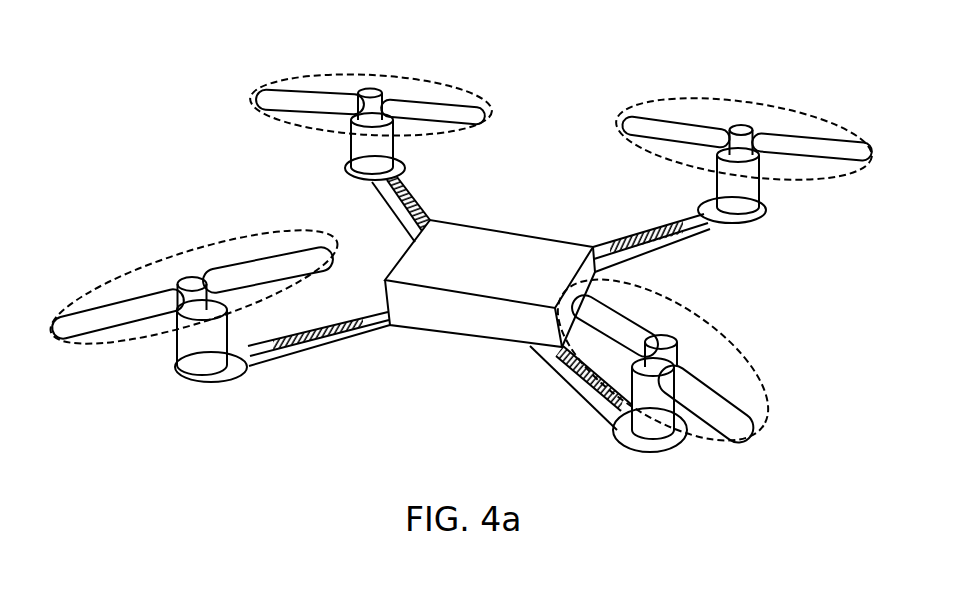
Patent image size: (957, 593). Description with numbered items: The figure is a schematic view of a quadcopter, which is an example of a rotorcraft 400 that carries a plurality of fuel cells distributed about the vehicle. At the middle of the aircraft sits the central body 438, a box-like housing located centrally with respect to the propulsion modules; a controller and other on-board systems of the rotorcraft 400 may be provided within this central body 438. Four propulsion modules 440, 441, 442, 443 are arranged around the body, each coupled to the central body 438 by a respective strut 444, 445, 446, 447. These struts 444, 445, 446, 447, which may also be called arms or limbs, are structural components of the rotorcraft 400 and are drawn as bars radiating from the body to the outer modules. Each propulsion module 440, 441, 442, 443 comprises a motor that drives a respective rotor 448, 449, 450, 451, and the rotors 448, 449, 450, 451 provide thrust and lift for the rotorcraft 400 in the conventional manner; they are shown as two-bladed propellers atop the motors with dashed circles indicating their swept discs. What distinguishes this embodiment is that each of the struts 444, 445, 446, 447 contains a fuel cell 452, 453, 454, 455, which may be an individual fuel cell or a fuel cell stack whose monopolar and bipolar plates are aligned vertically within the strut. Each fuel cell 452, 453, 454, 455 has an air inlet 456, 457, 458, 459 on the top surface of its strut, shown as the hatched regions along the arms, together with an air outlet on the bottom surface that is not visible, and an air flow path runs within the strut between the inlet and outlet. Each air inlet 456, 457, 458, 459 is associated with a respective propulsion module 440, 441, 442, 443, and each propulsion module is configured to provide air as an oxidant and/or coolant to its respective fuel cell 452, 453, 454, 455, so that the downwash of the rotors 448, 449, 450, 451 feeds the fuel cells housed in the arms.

The rotorcraft 400 is at (208, 92).
The central body 438 is at (462, 320).
The propulsion module 440 is at (653, 430).
The propulsion module 441 is at (193, 338).
The propulsion module 442 is at (367, 147).
The propulsion module 443 is at (747, 191).
The strut 444 is at (547, 357).
The strut 445 is at (247, 370).
The strut 446 is at (396, 218).
The strut 447 is at (706, 240).
The rotor 448 is at (693, 382).
The rotor 449 is at (230, 263).
The rotor 450 is at (328, 94).
The rotor 451 is at (681, 122).
The fuel cell 452 is at (563, 377).
The fuel cell 453 is at (350, 343).
The fuel cell 454 is at (427, 208).
The fuel cell 455 is at (652, 258).
The air inlet 456 is at (585, 400).
The air inlet 457 is at (303, 353).
The air inlet 458 is at (397, 187).
The air inlet 459 is at (640, 232).